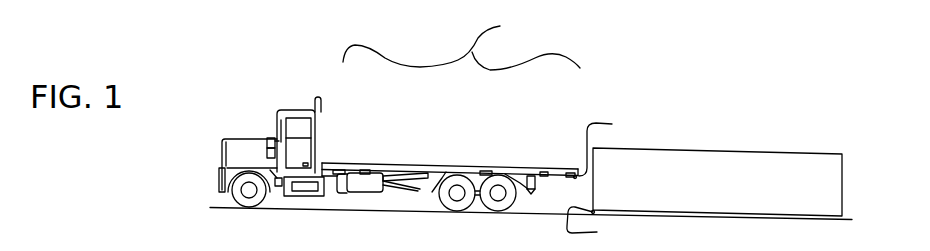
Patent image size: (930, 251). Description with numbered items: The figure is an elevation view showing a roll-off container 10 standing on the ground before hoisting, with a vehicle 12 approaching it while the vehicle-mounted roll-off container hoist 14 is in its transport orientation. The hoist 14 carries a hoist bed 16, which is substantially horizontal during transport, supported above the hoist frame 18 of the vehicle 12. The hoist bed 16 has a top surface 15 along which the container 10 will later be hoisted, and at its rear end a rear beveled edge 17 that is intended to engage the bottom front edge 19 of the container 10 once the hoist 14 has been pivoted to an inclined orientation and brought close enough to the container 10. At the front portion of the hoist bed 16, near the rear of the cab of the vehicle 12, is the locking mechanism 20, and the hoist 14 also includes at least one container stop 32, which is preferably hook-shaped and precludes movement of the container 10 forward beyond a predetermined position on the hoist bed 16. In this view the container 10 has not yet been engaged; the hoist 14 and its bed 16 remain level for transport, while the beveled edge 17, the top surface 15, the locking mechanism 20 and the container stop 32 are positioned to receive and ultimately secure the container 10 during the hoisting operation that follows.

The roll-off container 10 is at (777, 155).
The vehicle 12 is at (206, 153).
The roll-off container hoist 14 is at (461, 35).
The top surface 15 is at (493, 166).
The hoist bed 16 is at (400, 161).
The rear beveled edge 17 is at (615, 147).
The hoist frame 18 is at (411, 192).
The bottom front edge 19 is at (597, 228).
The locking mechanism 20 is at (342, 166).
The container stop 32 is at (331, 161).